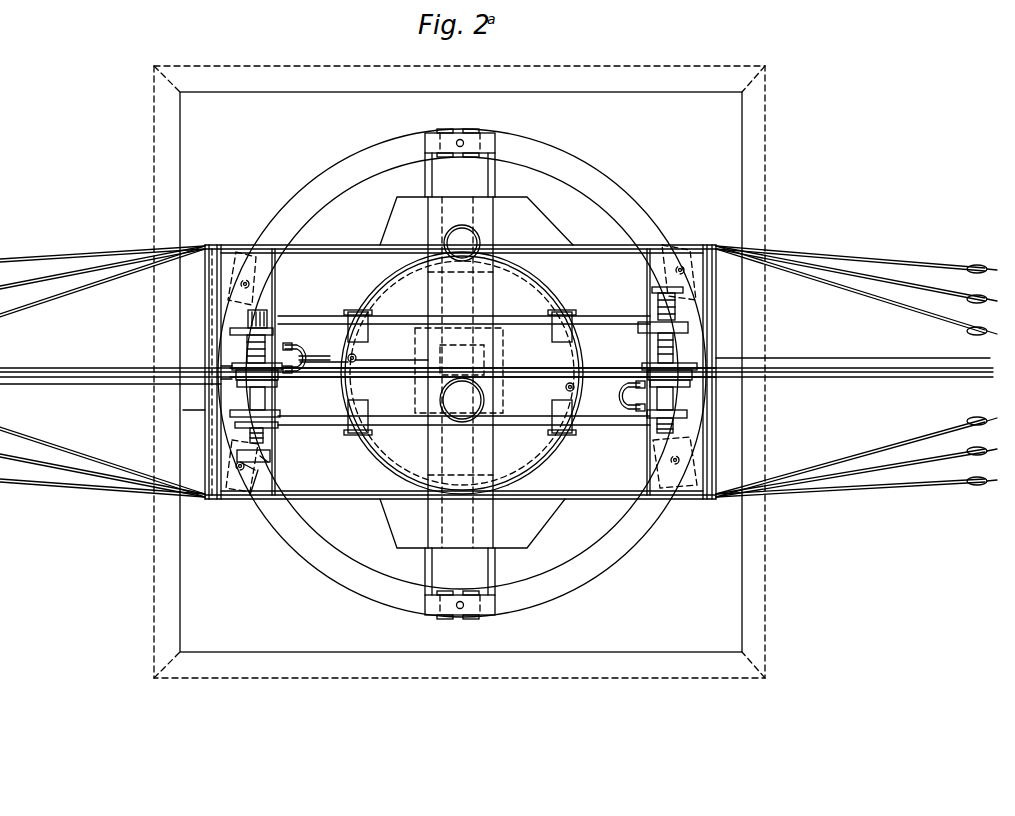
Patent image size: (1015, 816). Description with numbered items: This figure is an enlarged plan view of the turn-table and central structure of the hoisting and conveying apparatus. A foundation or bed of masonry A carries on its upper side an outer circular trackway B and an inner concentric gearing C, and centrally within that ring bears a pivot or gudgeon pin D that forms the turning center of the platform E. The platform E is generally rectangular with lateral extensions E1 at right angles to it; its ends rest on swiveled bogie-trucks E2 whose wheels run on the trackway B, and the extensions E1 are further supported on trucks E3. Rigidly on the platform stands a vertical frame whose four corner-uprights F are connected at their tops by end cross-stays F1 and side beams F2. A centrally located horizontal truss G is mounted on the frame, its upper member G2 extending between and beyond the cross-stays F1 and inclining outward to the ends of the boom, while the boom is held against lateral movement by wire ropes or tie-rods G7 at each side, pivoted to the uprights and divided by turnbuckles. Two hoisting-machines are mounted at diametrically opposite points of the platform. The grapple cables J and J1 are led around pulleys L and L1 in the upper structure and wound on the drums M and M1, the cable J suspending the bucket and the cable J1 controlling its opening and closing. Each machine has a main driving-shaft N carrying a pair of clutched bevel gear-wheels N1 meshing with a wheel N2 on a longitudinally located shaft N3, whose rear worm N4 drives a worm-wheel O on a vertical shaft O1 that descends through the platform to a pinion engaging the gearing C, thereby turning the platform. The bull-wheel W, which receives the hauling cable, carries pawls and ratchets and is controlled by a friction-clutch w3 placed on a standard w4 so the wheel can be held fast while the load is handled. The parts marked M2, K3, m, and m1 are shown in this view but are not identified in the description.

The foundation or bed of masonry A is at (459, 372).
The outer circular trackway B is at (348, 162).
The inner concentric gearing C is at (550, 300).
The pivot or gudgeon pin D is at (470, 385).
The platform E is at (460, 372).
The lateral extensions E1 is at (497, 190).
The bogie-trucks E2 is at (697, 516).
The trucks E3 is at (482, 142).
The corner-uprights F is at (212, 247).
The end cross-stays F1 is at (722, 322).
The side beams F2 is at (585, 252).
The horizontal truss G is at (402, 380).
The upper member of the truss G2 is at (104, 368).
The wire ropes or tie-rods G7 is at (40, 258).
The chain or cable J is at (247, 322).
The second chain or cable J1 is at (232, 388).
The rod K3 is at (184, 410).
The pulley L is at (204, 384).
The pulley L1 is at (205, 368).
The drum M is at (248, 385).
The drum M1 is at (250, 350).
The lower hub M2 is at (268, 432).
The main driving-shaft N is at (290, 418).
The bevel gear-wheels N1 is at (294, 343).
The wheel N2 is at (305, 362).
The longitudinally-located shaft N3 is at (352, 322).
The worm N4 is at (358, 353).
The worm-wheel O is at (324, 362).
The vertical shaft O1 is at (362, 360).
The bull-wheel or spool W is at (270, 458).
The friction-clutch w3 is at (262, 472).
The standard w4 is at (270, 462).
The clutch member m is at (673, 345).
The clutch fork m1 is at (674, 397).